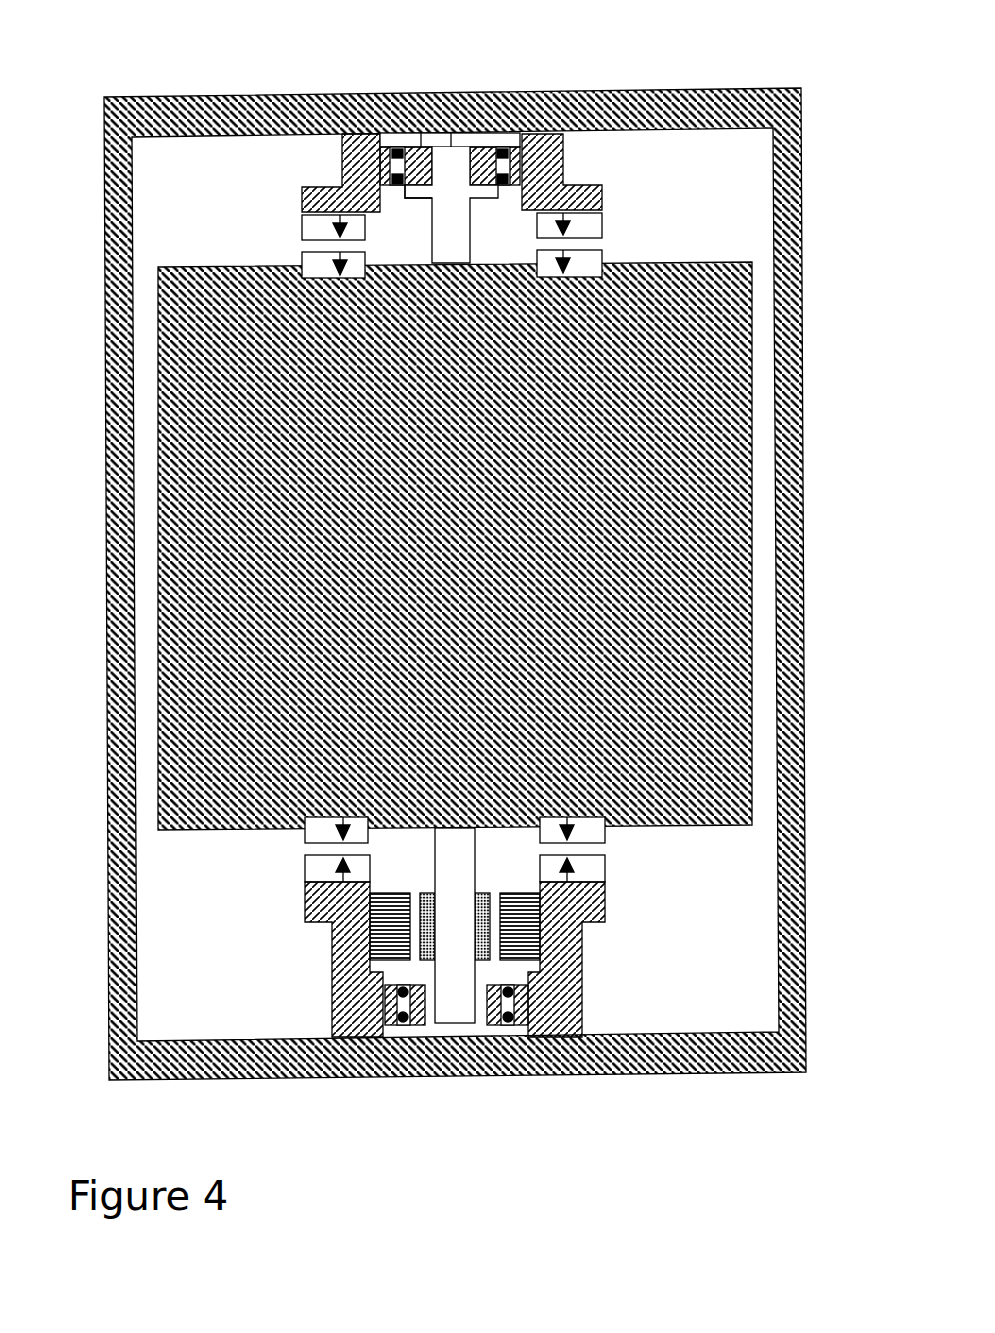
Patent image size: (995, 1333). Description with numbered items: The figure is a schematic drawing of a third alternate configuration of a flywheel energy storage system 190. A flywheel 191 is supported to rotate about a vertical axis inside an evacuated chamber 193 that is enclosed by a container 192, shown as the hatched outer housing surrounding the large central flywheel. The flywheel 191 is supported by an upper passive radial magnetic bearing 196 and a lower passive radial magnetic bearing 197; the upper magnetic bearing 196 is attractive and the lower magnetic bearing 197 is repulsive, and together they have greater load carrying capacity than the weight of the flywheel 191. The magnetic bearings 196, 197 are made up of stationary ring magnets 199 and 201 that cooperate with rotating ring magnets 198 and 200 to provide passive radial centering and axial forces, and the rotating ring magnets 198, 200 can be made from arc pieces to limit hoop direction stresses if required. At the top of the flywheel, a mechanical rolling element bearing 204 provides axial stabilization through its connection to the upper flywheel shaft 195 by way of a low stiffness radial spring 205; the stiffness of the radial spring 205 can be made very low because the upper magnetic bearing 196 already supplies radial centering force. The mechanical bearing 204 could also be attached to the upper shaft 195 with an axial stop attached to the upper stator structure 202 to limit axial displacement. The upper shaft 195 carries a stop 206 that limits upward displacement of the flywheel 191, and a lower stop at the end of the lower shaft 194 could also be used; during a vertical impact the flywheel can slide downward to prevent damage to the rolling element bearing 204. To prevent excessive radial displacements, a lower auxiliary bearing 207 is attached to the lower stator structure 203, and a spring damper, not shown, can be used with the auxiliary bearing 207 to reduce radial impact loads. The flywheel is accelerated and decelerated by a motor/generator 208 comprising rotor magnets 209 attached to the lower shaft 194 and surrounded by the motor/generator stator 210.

The flywheel energy storage system 190 is at (185, 52).
The flywheel 191 is at (750, 682).
The container 192 is at (805, 768).
The evacuated chamber 193 is at (758, 867).
The lower shaft 194 is at (458, 1025).
The upper flywheel shaft 195 is at (450, 145).
The upper passive radial magnetic bearing 196 is at (616, 239).
The lower passive radial magnetic bearing 197 is at (616, 854).
The rotating ring magnet 198 is at (302, 262).
The stationary ring magnet 199 is at (302, 222).
The rotating ring magnet 200 is at (305, 845).
The stationary ring magnet 201 is at (305, 870).
The upper stator structure 202 is at (605, 195).
The lower left bracket 203 is at (332, 912).
The mechanical rolling element bearing 204 is at (520, 145).
The low stiffness radial spring 205 is at (427, 145).
The stop 206 is at (418, 200).
The lower auxiliary bearing 207 is at (415, 1030).
The motor/generator 208 is at (418, 876).
The rotor magnets 209 is at (477, 895).
The motor/generator stator 210 is at (517, 960).